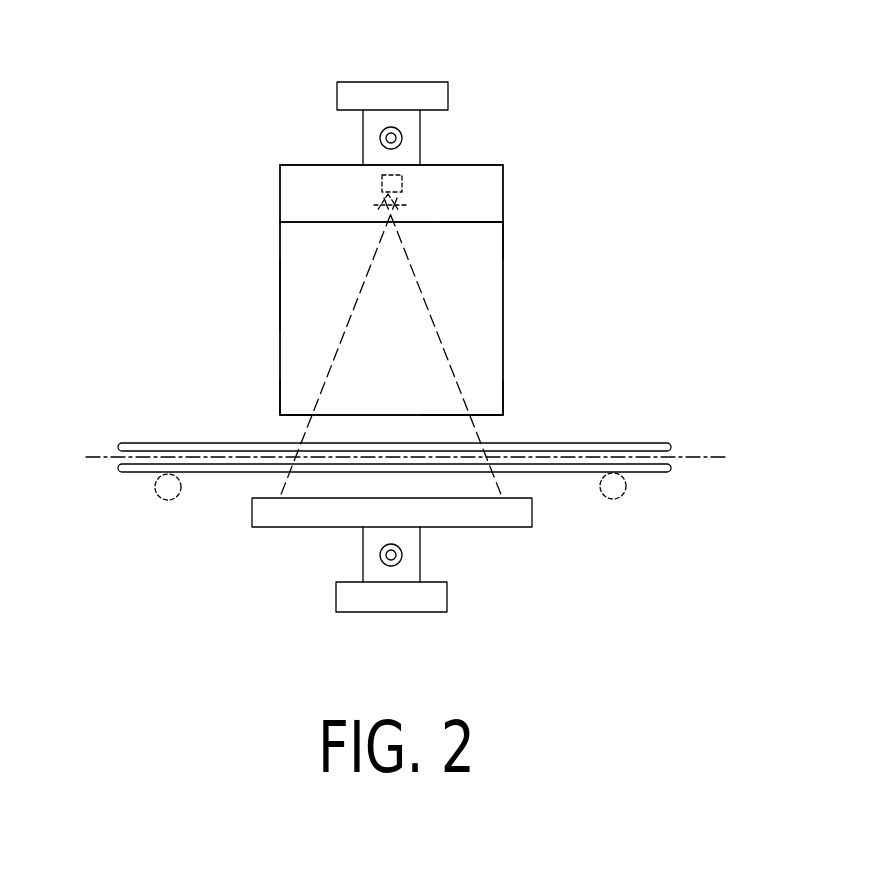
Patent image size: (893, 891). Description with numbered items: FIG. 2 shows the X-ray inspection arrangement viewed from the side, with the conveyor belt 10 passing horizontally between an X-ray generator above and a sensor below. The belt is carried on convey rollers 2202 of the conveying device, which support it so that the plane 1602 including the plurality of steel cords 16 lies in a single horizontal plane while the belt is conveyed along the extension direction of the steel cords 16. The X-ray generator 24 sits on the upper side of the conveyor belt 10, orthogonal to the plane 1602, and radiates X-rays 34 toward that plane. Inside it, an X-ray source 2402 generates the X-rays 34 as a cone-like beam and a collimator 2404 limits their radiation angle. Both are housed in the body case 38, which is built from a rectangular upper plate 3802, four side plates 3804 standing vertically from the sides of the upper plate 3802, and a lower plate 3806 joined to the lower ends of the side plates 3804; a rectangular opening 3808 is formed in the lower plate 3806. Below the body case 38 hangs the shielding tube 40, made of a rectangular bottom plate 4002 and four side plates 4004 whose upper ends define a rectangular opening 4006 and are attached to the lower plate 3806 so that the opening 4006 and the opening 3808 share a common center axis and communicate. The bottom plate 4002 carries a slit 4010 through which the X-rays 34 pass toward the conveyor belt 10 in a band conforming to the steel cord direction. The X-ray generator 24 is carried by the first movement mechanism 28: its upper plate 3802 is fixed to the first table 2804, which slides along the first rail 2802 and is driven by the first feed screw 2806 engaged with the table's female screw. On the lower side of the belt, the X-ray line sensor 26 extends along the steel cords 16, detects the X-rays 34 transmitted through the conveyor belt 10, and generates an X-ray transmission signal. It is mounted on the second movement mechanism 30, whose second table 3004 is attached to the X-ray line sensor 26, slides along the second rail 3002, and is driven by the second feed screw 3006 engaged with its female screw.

The conveyor belt 10 is at (412, 401).
The steel cords 16 is at (572, 444).
The plane 1602 is at (697, 456).
The convey rollers 2202 is at (156, 498).
The X-ray generator 24 is at (509, 180).
The X-ray source 2402 is at (404, 184).
The collimator 2404 is at (410, 207).
The X-ray line sensor 26 is at (539, 517).
The first movement mechanism 28 is at (389, 97).
The first rail 2802 is at (378, 81).
The first table 2804 is at (421, 128).
The first feed screw 2806 is at (379, 139).
The second movement mechanism 30 is at (382, 598).
The second rail 3002 is at (352, 613).
The second table 3004 is at (421, 552).
The second feed screw 3006 is at (362, 552).
The X-rays 34 is at (441, 320).
The body case 38 is at (270, 208).
The upper plate 3802 is at (312, 164).
The side plates 3804 is at (300, 188).
The lower plate 3806 is at (306, 223).
The opening 3808 is at (475, 219).
The shielding tube 40 is at (270, 344).
The bottom plate 4002 is at (297, 417).
The side plates 4004 is at (303, 310).
The opening 4006 is at (452, 224).
The slit 4010 is at (430, 413).